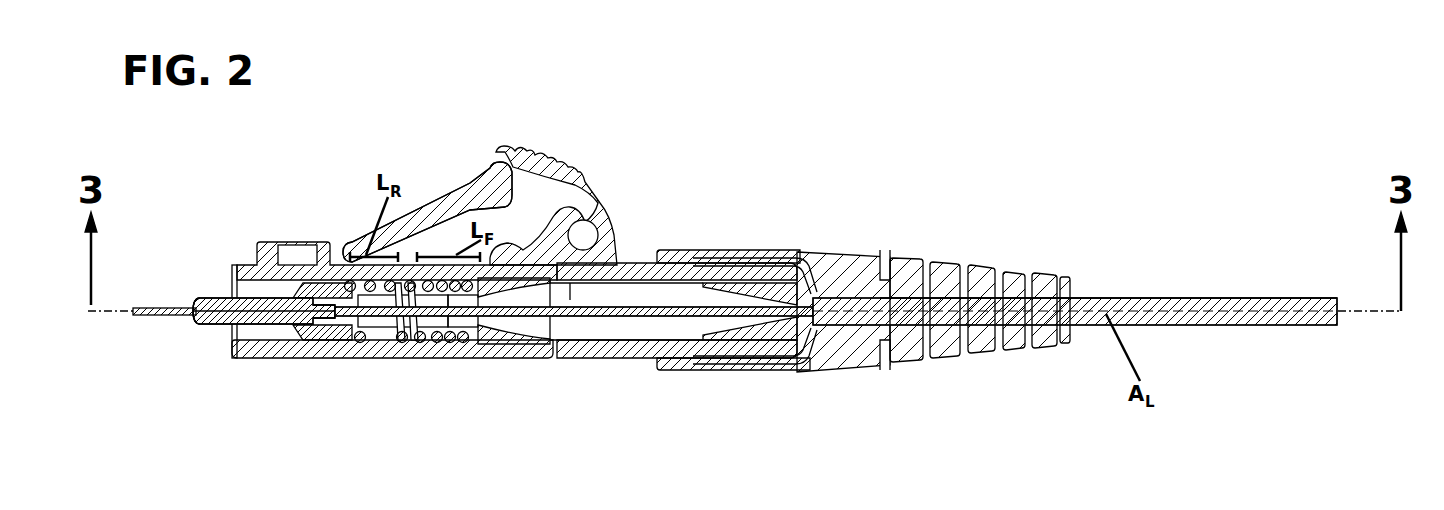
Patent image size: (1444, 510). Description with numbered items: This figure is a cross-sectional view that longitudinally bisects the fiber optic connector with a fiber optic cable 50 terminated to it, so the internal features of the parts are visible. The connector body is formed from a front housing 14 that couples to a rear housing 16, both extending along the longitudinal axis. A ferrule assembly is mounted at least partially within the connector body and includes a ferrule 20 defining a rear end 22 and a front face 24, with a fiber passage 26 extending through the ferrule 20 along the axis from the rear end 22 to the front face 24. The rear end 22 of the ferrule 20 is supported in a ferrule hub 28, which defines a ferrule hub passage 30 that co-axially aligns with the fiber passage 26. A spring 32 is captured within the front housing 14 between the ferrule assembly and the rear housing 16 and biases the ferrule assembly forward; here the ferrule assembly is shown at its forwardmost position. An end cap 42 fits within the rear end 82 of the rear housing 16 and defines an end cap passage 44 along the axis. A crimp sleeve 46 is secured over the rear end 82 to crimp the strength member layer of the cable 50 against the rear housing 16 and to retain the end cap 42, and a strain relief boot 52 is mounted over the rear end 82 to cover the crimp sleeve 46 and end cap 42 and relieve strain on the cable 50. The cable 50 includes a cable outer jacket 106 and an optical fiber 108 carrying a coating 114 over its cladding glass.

The front housing 14 is at (530, 358).
The rear housing 16 is at (605, 358).
The ferrule 20 is at (212, 325).
The rear end 22 is at (323, 319).
The front face 24 is at (192, 313).
The fiber passage 26 is at (248, 308).
The ferrule hub 28 is at (326, 290).
The ferrule hub passage 30 is at (372, 320).
The spring 32 is at (436, 343).
The end cap 42 is at (796, 286).
The end cap passage 44 is at (742, 321).
The crimp sleeve 46 is at (776, 262).
The fiber optic cable 50 is at (1239, 350).
The strain relief boot 52 is at (989, 272).
The rear end 82 is at (790, 347).
The cable outer jacket 106 is at (1263, 297).
The optical fiber 108 is at (150, 306).
The coating 114 is at (623, 317).